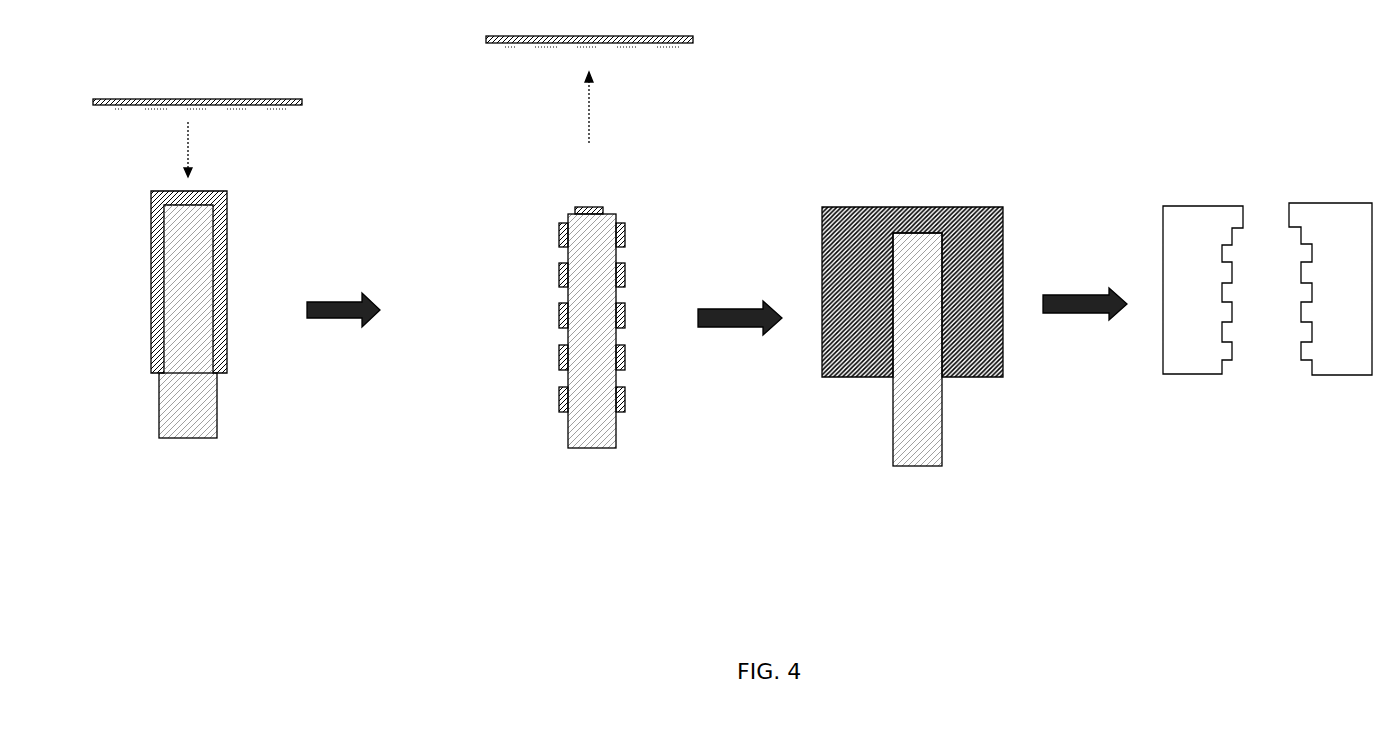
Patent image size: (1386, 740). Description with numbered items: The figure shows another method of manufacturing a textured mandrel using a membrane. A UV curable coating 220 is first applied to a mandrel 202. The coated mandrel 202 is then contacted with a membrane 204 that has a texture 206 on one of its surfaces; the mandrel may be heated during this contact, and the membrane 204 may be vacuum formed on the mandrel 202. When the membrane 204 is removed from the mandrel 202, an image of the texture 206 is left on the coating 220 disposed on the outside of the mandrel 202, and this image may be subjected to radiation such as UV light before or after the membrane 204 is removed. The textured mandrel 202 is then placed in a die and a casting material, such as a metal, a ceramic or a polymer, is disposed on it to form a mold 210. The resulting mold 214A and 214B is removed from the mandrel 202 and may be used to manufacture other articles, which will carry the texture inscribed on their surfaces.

The mandrel 202 is at (217, 398).
The membrane 204 is at (307, 101).
The texture 206 is at (110, 107).
The mold 210 is at (822, 364).
The mold half 214A is at (1203, 206).
The mold half 214B is at (1332, 203).
The UV curable coating 220 is at (227, 273).